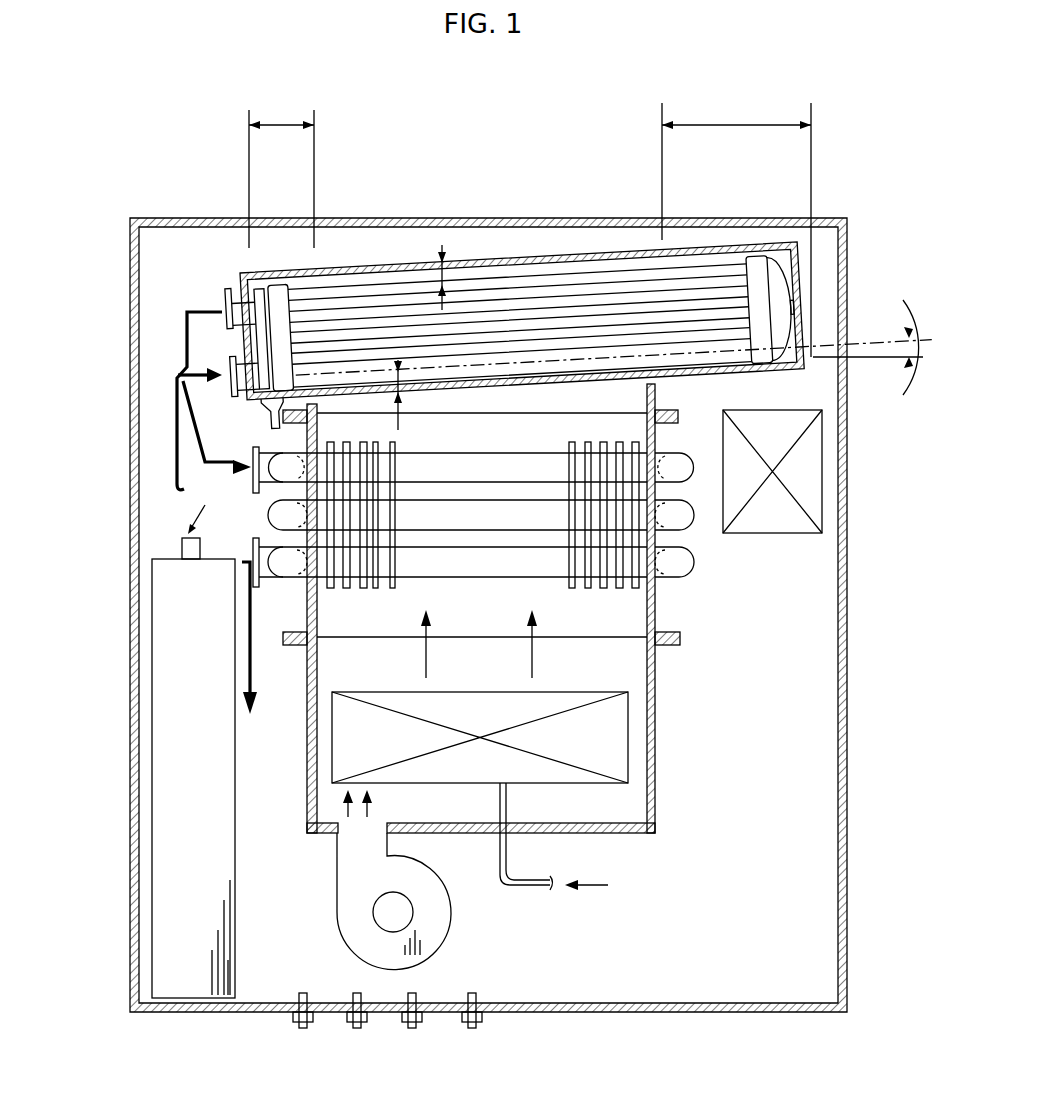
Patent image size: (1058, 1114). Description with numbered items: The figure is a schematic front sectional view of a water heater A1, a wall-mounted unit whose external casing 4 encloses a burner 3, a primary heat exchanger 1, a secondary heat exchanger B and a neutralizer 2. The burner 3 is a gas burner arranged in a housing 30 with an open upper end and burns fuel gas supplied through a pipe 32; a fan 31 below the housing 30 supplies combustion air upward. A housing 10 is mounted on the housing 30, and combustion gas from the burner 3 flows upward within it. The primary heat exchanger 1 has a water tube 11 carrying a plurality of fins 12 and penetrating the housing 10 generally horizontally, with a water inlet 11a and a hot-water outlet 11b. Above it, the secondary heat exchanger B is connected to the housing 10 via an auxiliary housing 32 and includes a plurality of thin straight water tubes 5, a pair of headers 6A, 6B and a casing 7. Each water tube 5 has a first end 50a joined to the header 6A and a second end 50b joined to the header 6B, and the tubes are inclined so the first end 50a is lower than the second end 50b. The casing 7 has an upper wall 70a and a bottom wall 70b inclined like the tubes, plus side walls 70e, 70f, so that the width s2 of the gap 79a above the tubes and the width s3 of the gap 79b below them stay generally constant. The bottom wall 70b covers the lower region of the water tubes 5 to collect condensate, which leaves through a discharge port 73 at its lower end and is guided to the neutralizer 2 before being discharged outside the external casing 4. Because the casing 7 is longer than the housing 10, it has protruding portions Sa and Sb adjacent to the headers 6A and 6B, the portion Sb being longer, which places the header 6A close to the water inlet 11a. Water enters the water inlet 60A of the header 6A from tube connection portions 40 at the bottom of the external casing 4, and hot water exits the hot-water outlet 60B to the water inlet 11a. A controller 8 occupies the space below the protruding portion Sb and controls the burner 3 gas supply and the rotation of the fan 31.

The water heater A1 is at (132, 142).
The primary heat exchanger 1 is at (484, 545).
The neutralizer 2 is at (168, 720).
The burner 3 is at (618, 730).
The external casing 4 is at (134, 515).
The water tubes 5 is at (520, 325).
The header 6A is at (281, 337).
The header 6B is at (771, 308).
The casing 7 is at (579, 333).
The controller 8 is at (810, 478).
The housing 10 is at (655, 600).
The water tube 11 is at (452, 563).
The water inlet 11a is at (257, 478).
The hot-water outlet 11b is at (256, 577).
The fins 12 is at (364, 588).
The housing 30 is at (655, 782).
The fan 31 is at (438, 924).
The pipe 32 is at (664, 411).
The tube connection portions 40 is at (310, 1027).
The first end 50a is at (262, 339).
The second end 50b is at (740, 300).
The water inlet 60A is at (227, 365).
The hot-water outlet 60B is at (222, 300).
The upper wall 70a is at (372, 268).
The bottom wall 70b is at (470, 388).
The side wall 70e is at (244, 300).
The side wall 70f is at (802, 265).
The discharge port 73 is at (273, 413).
The gap 79a is at (534, 270).
The gap 79b is at (536, 376).
The secondary heat exchanger B is at (575, 249).
The width s2 is at (443, 275).
The width s3 is at (400, 393).
The protruding portion Sa is at (281, 171).
The protruding portion Sb is at (736, 225).